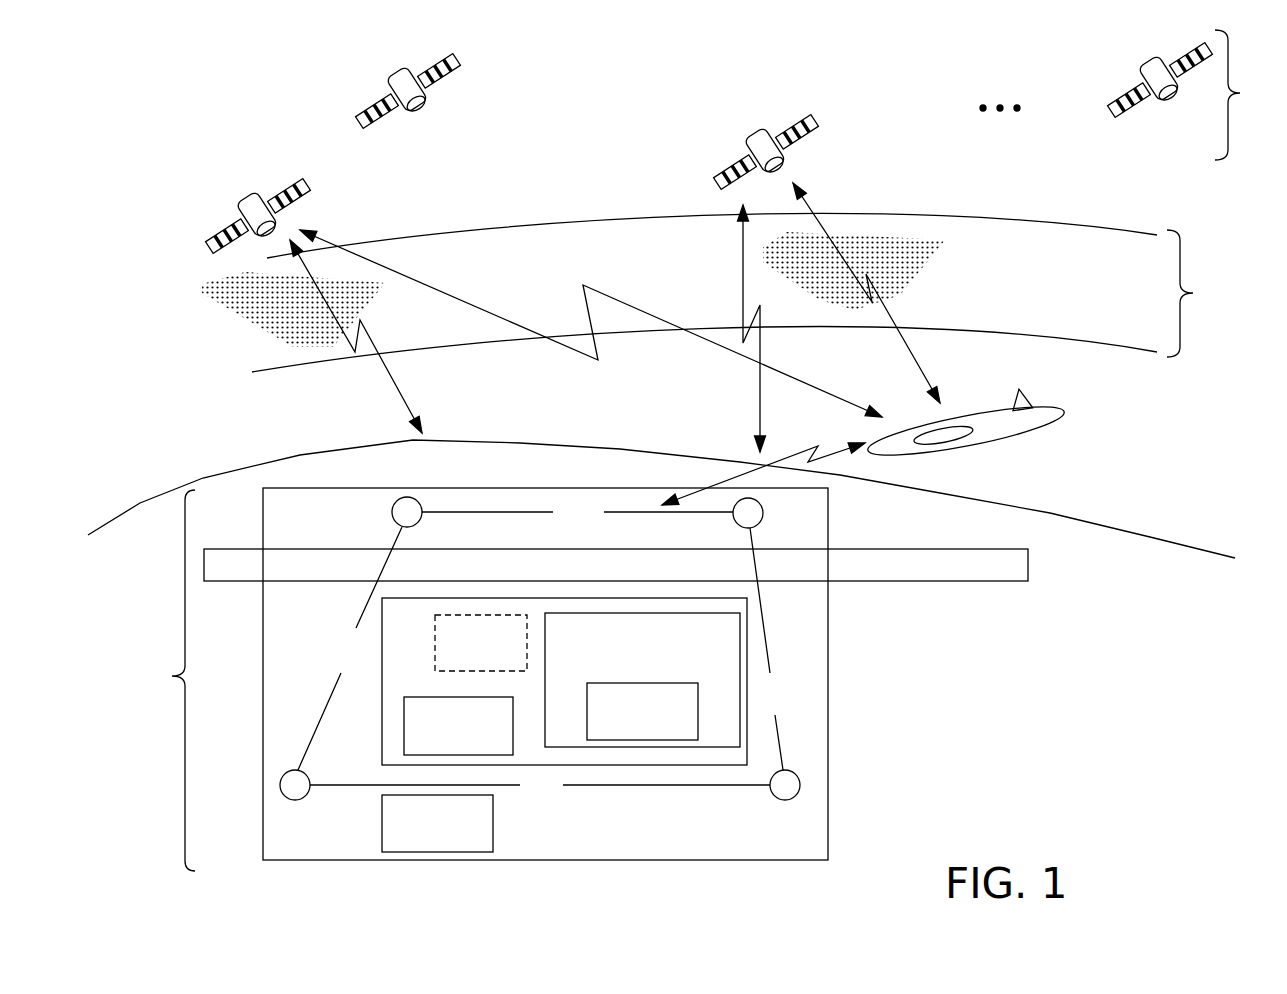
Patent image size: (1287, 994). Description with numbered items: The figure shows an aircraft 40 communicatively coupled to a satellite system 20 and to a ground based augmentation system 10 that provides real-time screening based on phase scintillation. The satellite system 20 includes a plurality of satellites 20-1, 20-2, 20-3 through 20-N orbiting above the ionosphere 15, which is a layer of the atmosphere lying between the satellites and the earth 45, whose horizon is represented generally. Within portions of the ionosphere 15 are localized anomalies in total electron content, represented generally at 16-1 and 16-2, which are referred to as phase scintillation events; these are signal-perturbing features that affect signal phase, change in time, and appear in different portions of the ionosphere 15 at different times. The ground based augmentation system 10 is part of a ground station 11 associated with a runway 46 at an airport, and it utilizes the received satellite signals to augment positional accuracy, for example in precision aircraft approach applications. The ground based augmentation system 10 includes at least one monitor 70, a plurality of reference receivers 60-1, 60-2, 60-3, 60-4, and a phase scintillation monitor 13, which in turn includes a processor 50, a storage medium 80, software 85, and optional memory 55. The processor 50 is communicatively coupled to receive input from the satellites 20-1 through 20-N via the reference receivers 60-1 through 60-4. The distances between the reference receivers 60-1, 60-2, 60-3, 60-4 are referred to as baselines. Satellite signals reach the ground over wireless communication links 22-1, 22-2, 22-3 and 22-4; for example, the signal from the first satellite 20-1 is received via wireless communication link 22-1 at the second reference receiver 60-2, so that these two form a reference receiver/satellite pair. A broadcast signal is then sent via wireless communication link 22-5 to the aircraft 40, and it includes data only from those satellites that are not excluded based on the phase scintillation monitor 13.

The ground based augmentation system 10 is at (323, 543).
The ground station 11 is at (170, 680).
The phase scintillation monitor 13 is at (414, 633).
The ionosphere 15 is at (738, 292).
The phase scintillation event 16-1 is at (203, 292).
The phase scintillation event 16-2 is at (940, 255).
The satellite system 20 is at (1125, 95).
The first satellite 20-1 is at (287, 178).
The satellite 20-2 is at (457, 68).
The satellite 20-3 is at (817, 130).
The satellite 20-N is at (1113, 120).
The wireless communication link 22-1 is at (413, 407).
The wireless communication link 22-2 is at (850, 400).
The wireless communication link 22-3 is at (740, 300).
The wireless communication link 22-4 is at (907, 360).
The wireless communication link 22-5 is at (787, 455).
The aircraft 40 is at (1010, 440).
The earth 45 is at (1163, 533).
The runway 46 is at (902, 582).
The processor 50 is at (447, 745).
The memory 55 is at (470, 666).
The first reference receiver 60-1 is at (278, 789).
The second reference receiver 60-2 is at (404, 497).
The third reference receiver 60-3 is at (763, 503).
The fourth reference receiver 60-4 is at (803, 785).
The monitor 70 is at (426, 844).
The storage medium 80 is at (631, 669).
The software 85 is at (631, 730).